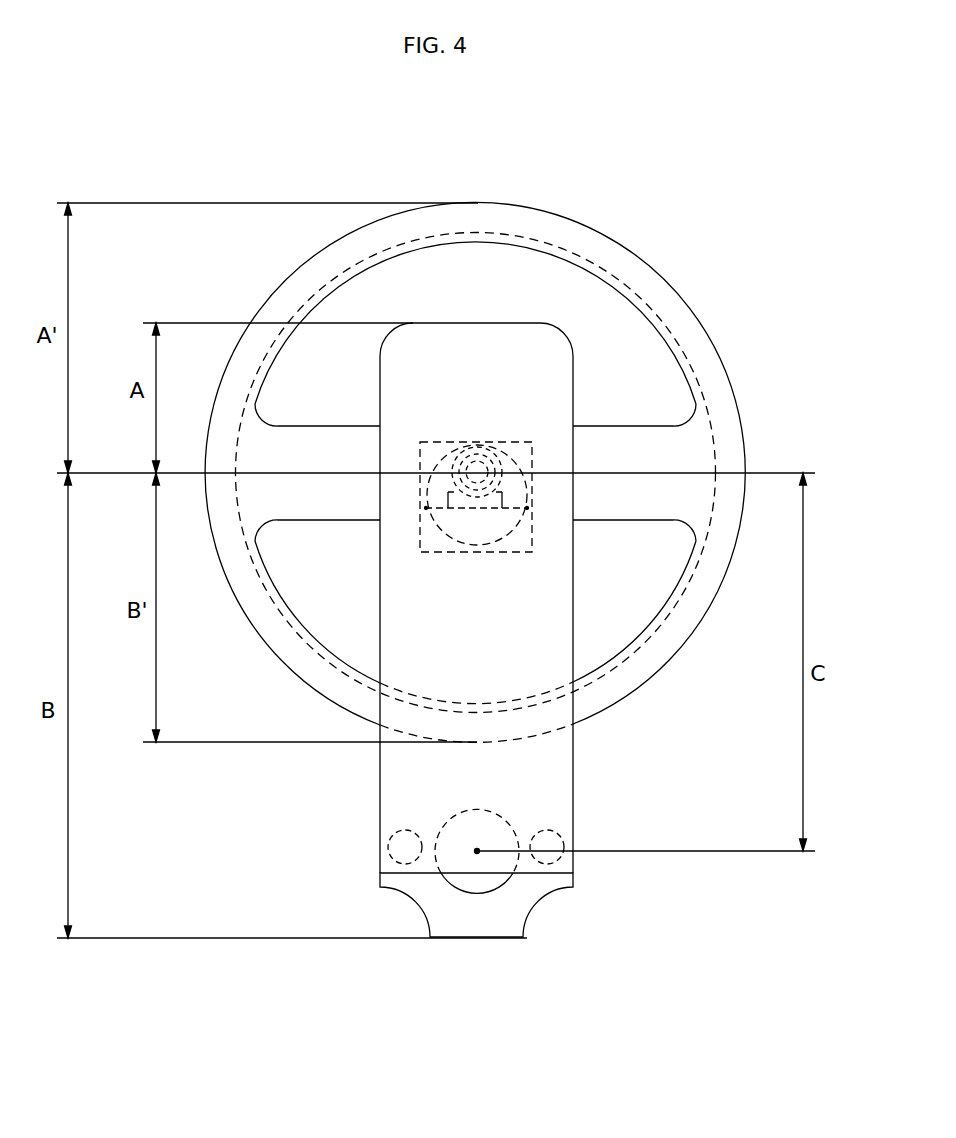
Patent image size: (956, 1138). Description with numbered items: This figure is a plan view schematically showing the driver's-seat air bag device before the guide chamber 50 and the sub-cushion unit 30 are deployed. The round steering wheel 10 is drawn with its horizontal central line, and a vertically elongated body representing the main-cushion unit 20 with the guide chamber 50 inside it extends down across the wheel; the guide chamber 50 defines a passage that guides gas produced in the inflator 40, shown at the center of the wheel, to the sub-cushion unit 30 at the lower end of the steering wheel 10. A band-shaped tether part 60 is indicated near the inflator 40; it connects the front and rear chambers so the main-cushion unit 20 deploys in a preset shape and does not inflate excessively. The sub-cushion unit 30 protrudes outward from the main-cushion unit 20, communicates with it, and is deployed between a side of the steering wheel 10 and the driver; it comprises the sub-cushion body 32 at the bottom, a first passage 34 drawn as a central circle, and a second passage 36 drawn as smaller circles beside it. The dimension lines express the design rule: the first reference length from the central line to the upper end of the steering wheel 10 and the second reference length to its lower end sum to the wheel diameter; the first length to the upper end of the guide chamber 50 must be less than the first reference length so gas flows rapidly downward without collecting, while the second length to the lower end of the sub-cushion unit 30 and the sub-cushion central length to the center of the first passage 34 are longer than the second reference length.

The steering wheel 10 is at (688, 306).
The main-cushion unit 20 is at (713, 437).
The sub-cushion unit 30 is at (572, 907).
The sub-cushion body 32 is at (527, 925).
The first passage 34 is at (477, 893).
The second passage 36 is at (388, 849).
The inflator 40 is at (486, 338).
The guide chamber 50 is at (545, 603).
The tether part 60 is at (442, 530).